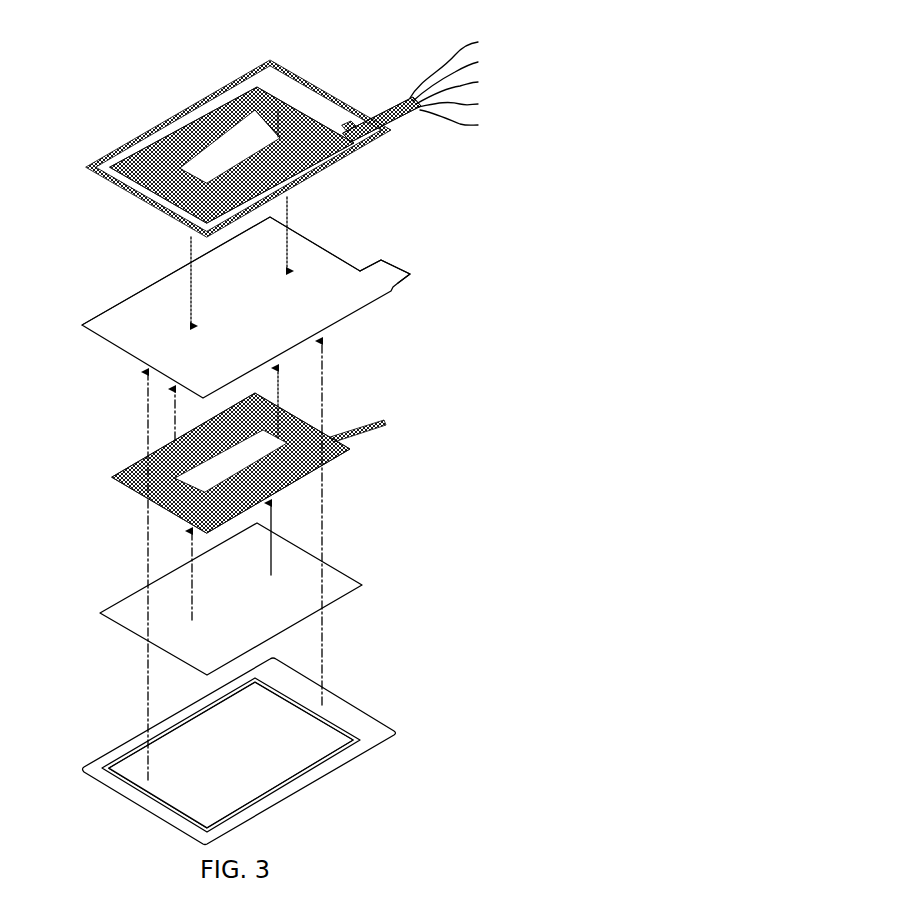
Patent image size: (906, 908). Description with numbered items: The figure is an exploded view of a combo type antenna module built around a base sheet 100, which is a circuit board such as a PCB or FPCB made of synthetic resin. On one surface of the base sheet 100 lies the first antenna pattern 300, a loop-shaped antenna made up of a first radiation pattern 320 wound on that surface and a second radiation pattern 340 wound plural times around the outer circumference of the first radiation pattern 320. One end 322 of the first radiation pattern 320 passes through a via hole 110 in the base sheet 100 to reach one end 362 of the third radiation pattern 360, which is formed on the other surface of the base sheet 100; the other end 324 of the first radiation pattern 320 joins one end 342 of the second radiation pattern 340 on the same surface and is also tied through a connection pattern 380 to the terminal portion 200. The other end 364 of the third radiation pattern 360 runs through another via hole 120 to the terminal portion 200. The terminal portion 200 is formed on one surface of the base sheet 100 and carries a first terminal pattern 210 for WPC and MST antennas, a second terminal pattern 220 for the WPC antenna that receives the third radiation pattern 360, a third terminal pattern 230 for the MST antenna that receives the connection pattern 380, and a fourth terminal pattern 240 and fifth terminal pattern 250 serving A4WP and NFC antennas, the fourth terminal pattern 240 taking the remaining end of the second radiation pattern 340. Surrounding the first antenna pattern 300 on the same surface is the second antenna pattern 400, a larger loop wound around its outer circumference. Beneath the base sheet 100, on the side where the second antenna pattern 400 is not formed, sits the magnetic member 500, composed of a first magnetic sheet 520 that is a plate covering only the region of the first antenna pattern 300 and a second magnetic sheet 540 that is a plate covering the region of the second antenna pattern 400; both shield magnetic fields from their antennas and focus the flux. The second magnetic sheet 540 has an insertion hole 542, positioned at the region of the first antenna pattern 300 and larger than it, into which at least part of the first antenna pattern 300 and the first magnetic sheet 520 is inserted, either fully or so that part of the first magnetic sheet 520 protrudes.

The base sheet 100 is at (397, 277).
The via hole 110 is at (278, 292).
The via hole 120 is at (378, 270).
The terminal portion 200 is at (482, 84).
The first terminal pattern 210 is at (462, 65).
The second terminal pattern 220 is at (463, 77).
The third terminal pattern 230 is at (465, 88).
The fourth terminal pattern 240 is at (466, 104).
The fifth terminal pattern 250 is at (467, 123).
The first antenna pattern 300 is at (204, 121).
The first radiation pattern 320 is at (150, 127).
The one end of the first radiation pattern 322 is at (282, 107).
The other end of the first radiation pattern 324 is at (357, 153).
The second radiation pattern 340 is at (185, 117).
The one end of the second radiation pattern 342 is at (382, 119).
The third radiation pattern 360 is at (143, 452).
The one end of the third radiation pattern 362 is at (330, 465).
The other end of the third radiation pattern 364 is at (385, 422).
The connection pattern 380 is at (347, 122).
The second antenna pattern 400 is at (230, 85).
The magnetic member 500 is at (310, 684).
The first magnetic sheet 520 is at (362, 585).
The second magnetic sheet 540 is at (333, 693).
The insertion hole 542 is at (288, 757).